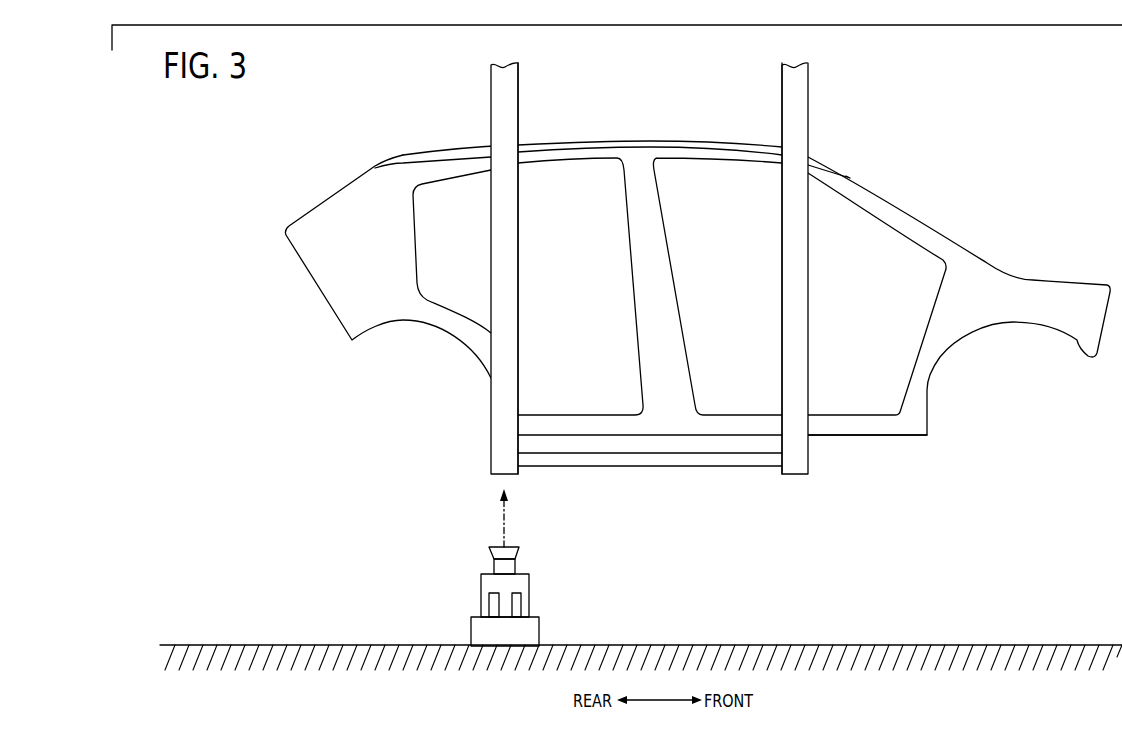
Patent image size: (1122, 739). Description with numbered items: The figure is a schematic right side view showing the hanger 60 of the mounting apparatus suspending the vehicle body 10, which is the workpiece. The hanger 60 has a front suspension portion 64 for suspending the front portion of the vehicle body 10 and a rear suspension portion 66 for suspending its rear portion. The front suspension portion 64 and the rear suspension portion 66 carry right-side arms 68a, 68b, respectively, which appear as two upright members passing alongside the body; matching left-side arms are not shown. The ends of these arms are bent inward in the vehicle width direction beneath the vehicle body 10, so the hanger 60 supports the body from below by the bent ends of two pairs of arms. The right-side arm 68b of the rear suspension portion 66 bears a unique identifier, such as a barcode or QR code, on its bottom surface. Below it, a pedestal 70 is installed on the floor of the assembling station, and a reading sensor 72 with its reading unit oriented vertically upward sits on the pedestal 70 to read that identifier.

The vehicle body 10 is at (1043, 275).
The hanger 60 is at (652, 262).
The front suspension portion 64 is at (796, 268).
The rear suspension portion 66 is at (507, 268).
The right-side arm 68a is at (802, 125).
The right-side arm 68b is at (511, 126).
The pedestal 70 is at (527, 629).
The reading sensor 72 is at (513, 552).